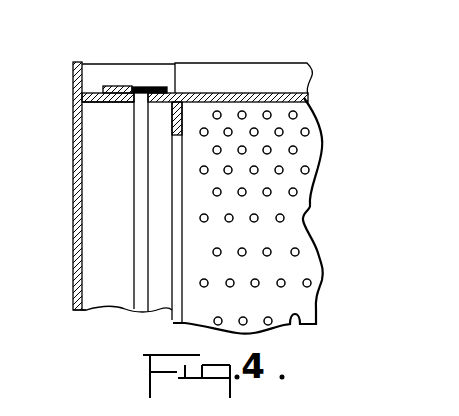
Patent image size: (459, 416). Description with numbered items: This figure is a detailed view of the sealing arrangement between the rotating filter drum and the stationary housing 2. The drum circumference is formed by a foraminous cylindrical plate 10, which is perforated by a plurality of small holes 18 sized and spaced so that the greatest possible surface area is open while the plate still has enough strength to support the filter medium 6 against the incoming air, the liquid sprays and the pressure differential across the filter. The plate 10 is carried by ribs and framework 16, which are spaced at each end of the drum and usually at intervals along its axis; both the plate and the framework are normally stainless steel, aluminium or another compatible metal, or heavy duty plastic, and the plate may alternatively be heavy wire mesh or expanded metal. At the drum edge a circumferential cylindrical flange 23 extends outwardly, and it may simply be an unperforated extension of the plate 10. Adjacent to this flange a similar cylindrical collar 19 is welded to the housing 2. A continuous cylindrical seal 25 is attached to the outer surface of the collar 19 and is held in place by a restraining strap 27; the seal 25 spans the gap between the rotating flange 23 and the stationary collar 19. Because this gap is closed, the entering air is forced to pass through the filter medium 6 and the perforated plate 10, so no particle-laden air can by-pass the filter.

The housing 2 is at (73, 175).
The filter medium 6 is at (262, 88).
The foraminous cylindrical plate 10 is at (298, 203).
The ribs and framework 16 is at (172, 235).
The small holes 18 is at (309, 168).
The cylindrical collar 19 is at (115, 103).
The circumferential cylindrical flange 23 is at (158, 100).
The continuous cylindrical seal 25 is at (140, 87).
The restraining strap 27 is at (114, 86).